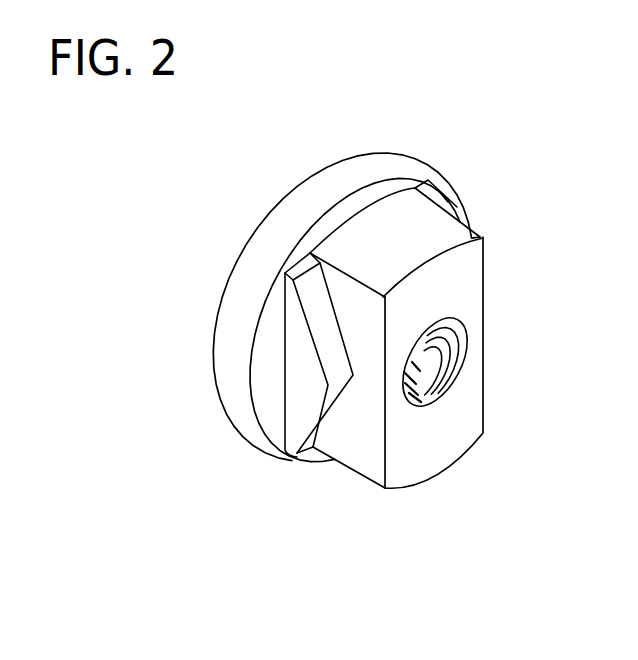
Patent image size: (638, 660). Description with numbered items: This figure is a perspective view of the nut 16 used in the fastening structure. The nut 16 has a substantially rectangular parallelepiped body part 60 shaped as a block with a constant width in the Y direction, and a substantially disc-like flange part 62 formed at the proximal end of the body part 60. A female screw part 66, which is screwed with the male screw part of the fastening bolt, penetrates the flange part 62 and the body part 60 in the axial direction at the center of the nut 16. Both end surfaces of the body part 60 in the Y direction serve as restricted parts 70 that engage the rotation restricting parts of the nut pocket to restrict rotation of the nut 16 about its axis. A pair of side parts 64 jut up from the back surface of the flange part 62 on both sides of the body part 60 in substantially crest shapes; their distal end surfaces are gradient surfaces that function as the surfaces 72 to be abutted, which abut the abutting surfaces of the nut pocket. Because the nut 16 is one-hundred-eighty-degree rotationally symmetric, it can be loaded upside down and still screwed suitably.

The nut 16 is at (351, 122).
The body part 60 is at (402, 222).
The flange part 62 is at (320, 183).
The side parts 64 is at (457, 192).
The female screw part 66 is at (460, 373).
The restricted parts 70 is at (374, 462).
The surfaces to be abutted 72 is at (322, 427).